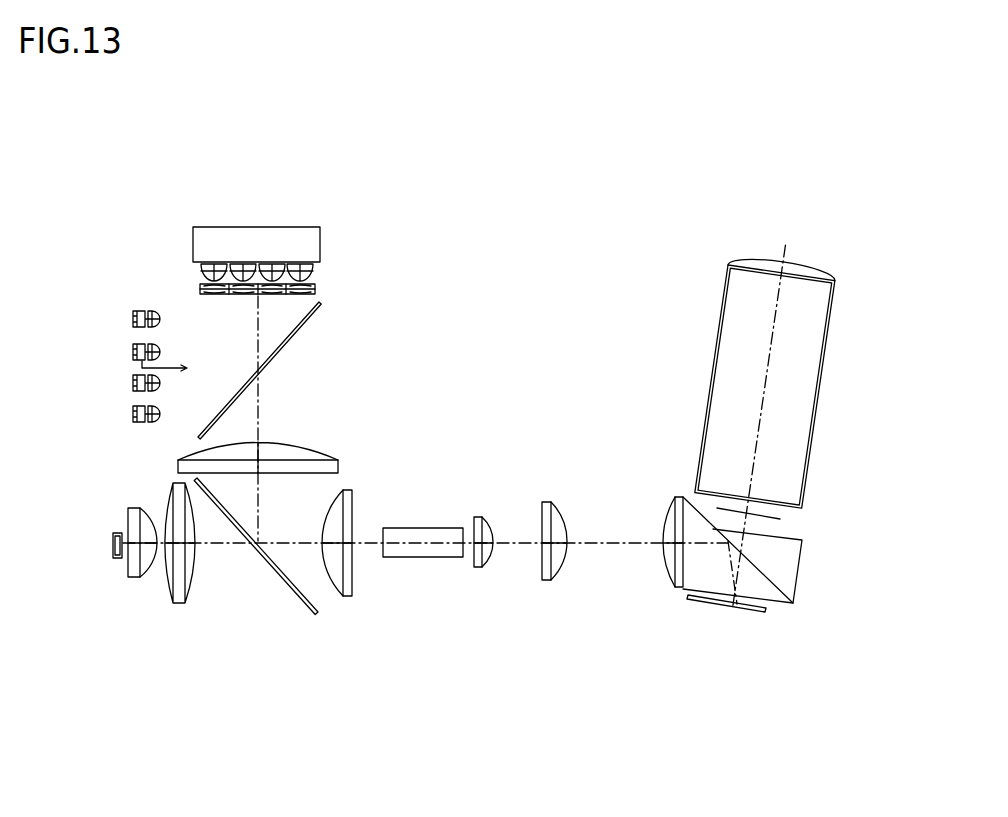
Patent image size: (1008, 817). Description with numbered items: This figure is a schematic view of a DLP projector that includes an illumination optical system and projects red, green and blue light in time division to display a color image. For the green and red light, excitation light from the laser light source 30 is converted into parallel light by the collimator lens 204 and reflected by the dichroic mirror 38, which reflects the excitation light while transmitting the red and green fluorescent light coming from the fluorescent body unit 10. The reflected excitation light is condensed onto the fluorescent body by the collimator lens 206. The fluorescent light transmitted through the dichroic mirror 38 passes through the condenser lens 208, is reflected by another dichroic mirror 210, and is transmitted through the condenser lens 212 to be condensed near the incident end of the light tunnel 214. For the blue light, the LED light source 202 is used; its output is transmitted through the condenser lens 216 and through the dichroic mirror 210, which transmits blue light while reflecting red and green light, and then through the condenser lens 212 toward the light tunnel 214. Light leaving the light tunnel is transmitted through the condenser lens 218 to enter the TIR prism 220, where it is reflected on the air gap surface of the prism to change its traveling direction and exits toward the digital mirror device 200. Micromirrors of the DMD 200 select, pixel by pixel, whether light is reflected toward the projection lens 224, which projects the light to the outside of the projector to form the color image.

The fluorescent body unit 10 is at (312, 243).
The laser light source 30 is at (132, 350).
The collimator lens 204 is at (153, 312).
The collimator lens 206 is at (315, 289).
The dichroic mirror 38 is at (303, 323).
The condenser lens 208 is at (334, 465).
The LED light source 202 is at (112, 535).
The condenser lens 216 is at (133, 574).
The dichroic mirror 210 is at (285, 577).
The condenser lens 212 is at (345, 598).
The light tunnel 214 is at (430, 548).
The condenser lens 218 is at (480, 567).
The TIR prism 220 is at (698, 573).
The digital mirror device 200 is at (750, 612).
The projection lens 224 is at (723, 368).